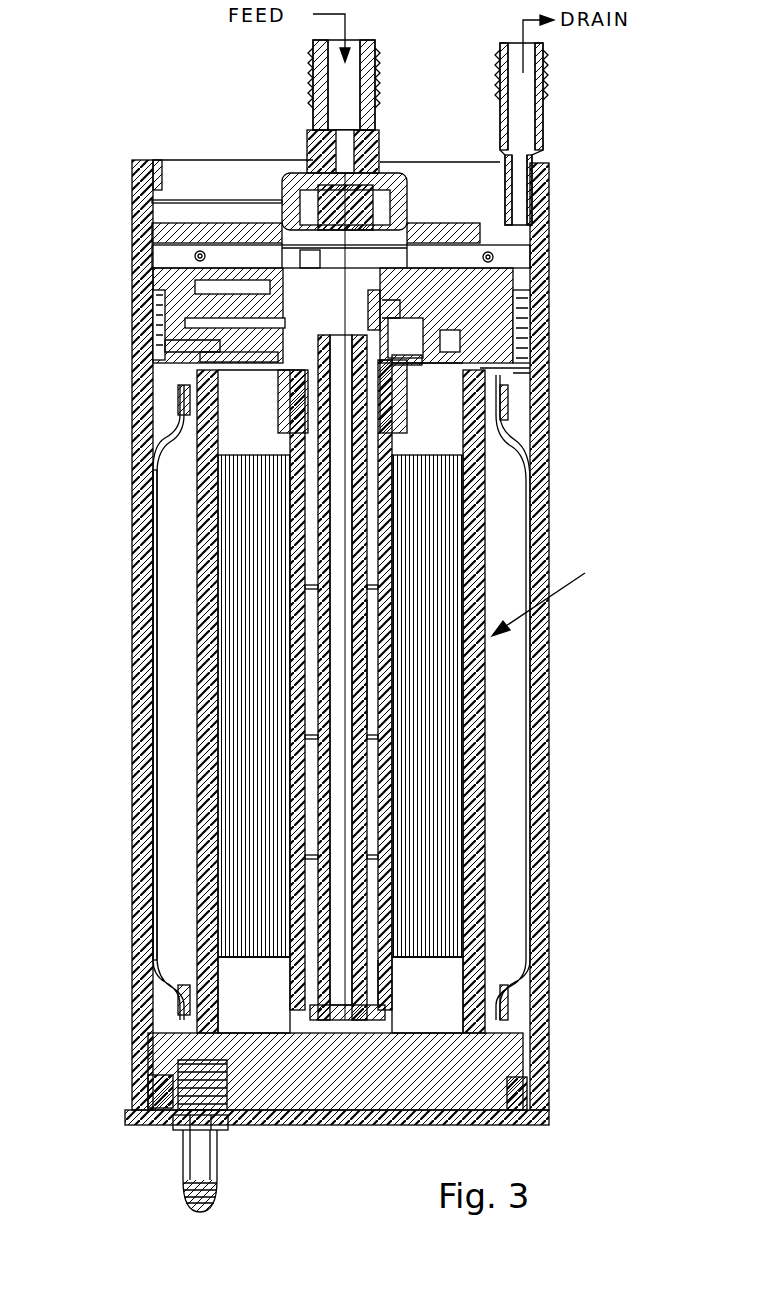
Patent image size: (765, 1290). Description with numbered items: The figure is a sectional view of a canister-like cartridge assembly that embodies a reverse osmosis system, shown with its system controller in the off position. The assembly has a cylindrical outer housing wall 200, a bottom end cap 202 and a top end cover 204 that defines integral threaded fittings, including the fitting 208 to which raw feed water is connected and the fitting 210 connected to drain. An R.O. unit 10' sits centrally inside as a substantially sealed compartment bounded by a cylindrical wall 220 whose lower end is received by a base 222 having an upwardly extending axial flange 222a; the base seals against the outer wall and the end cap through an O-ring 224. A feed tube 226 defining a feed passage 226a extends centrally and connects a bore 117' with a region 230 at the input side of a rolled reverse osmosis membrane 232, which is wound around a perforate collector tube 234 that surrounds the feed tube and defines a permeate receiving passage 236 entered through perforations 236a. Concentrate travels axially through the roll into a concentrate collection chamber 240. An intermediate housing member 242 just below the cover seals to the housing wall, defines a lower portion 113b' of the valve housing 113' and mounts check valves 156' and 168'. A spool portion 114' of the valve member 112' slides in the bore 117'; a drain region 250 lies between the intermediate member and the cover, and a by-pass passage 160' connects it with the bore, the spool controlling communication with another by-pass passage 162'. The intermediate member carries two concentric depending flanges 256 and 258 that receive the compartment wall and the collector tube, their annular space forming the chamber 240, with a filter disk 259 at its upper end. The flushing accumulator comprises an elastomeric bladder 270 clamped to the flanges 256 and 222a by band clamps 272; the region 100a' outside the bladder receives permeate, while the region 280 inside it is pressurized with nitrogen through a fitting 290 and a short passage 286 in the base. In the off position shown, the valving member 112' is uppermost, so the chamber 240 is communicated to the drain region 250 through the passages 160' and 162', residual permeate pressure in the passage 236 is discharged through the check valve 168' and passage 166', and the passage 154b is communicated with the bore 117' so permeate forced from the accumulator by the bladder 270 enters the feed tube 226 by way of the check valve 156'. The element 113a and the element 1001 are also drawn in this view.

The R.O. unit 10' is at (554, 594).
The region between bladder and housing wall 100a' is at (127, 349).
The valve member 112' is at (320, 251).
The valve housing 113' is at (374, 575).
The valve inlet portion 113a is at (312, 180).
The lower portion of the valve housing 113b' is at (416, 301).
The spool portion 114' is at (387, 310).
The bore 117' is at (260, 362).
The passage 154b is at (232, 328).
The check valve 156' is at (123, 325).
The by-pass passage 160' is at (170, 315).
The by-pass passage 162' is at (468, 338).
The passage 166' is at (409, 338).
The check valve 168' is at (411, 354).
The outer housing wall 200 is at (541, 742).
The bottom end cap 202 is at (520, 1120).
The top end cover 204 is at (216, 200).
The threaded fitting 208 is at (376, 100).
The threaded fitting 210 is at (542, 124).
The cylindrical wall 220 is at (480, 818).
The base 222 is at (515, 1060).
The axial flange 222a is at (500, 1008).
The O-ring 224 is at (520, 1101).
The feed tube 226 is at (360, 537).
The feed passage 226a is at (345, 555).
The region forming input side of membrane 230 is at (450, 1012).
The reverse osmosis membrane 232 is at (251, 701).
The perforate collector tube 234 is at (386, 797).
The permeate receiving passage 236 is at (363, 707).
The perforations 236a is at (386, 736).
The concentrate collection chamber 240 is at (460, 430).
The intermediate housing member 242 is at (455, 315).
The drain region 250 is at (524, 258).
The axial flange 256 is at (214, 401).
The inner axial flange 258 is at (400, 392).
The filter disk 259 is at (530, 375).
The bladder-like element 270 is at (520, 685).
The band clamps 272 is at (176, 400).
The pressurized region 280 is at (190, 670).
The short passage 286 is at (214, 1001).
The fitting 290 is at (225, 1155).
The retaining ring 1001 is at (518, 426).